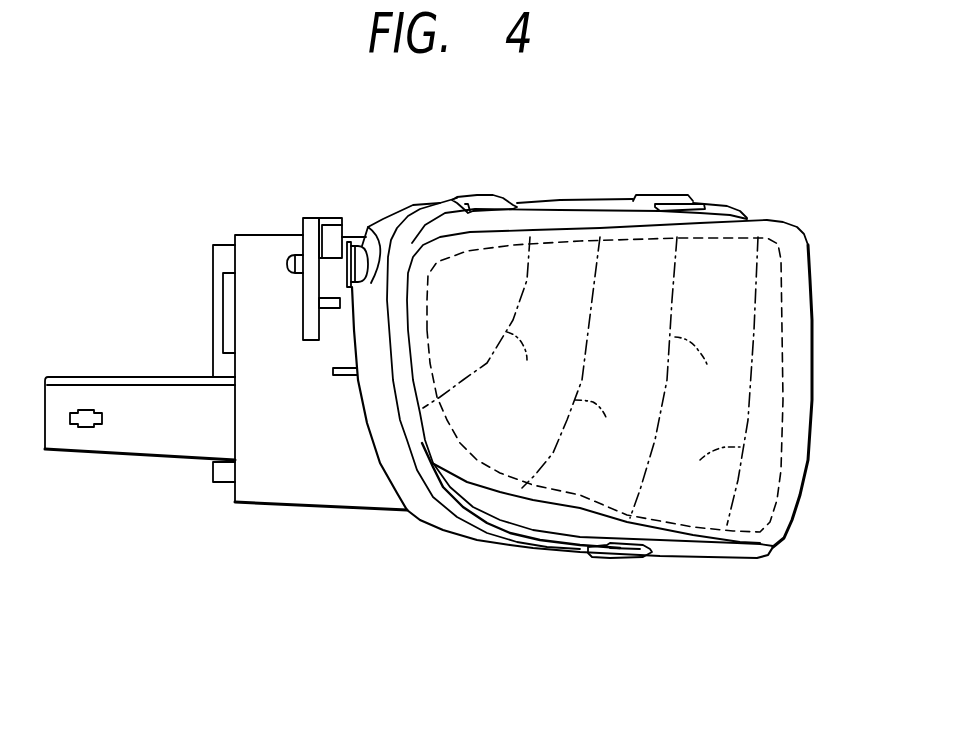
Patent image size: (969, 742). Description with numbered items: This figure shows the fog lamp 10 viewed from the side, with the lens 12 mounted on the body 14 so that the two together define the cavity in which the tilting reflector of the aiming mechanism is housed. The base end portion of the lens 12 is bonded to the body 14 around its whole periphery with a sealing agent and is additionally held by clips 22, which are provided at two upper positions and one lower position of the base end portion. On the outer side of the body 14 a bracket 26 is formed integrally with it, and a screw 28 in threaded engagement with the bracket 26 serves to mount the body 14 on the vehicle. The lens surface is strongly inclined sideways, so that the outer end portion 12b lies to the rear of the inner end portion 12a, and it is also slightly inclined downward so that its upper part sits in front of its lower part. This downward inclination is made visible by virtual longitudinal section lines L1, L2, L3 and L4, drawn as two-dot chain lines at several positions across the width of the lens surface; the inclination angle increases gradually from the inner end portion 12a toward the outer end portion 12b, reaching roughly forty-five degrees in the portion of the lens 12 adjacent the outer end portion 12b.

The fog lamp 10 is at (597, 168).
The lens 12 is at (812, 203).
The inner end portion 12a is at (795, 400).
The outer end portion 12b is at (438, 365).
The body 14 is at (375, 531).
The clips 22 is at (470, 200).
The bracket 26 is at (317, 217).
The screw 28 is at (377, 235).
The virtual longitudinal section line L1 is at (712, 472).
The virtual longitudinal section line L2 is at (701, 367).
The virtual longitudinal section line L3 is at (600, 427).
The virtual longitudinal section line L4 is at (527, 364).